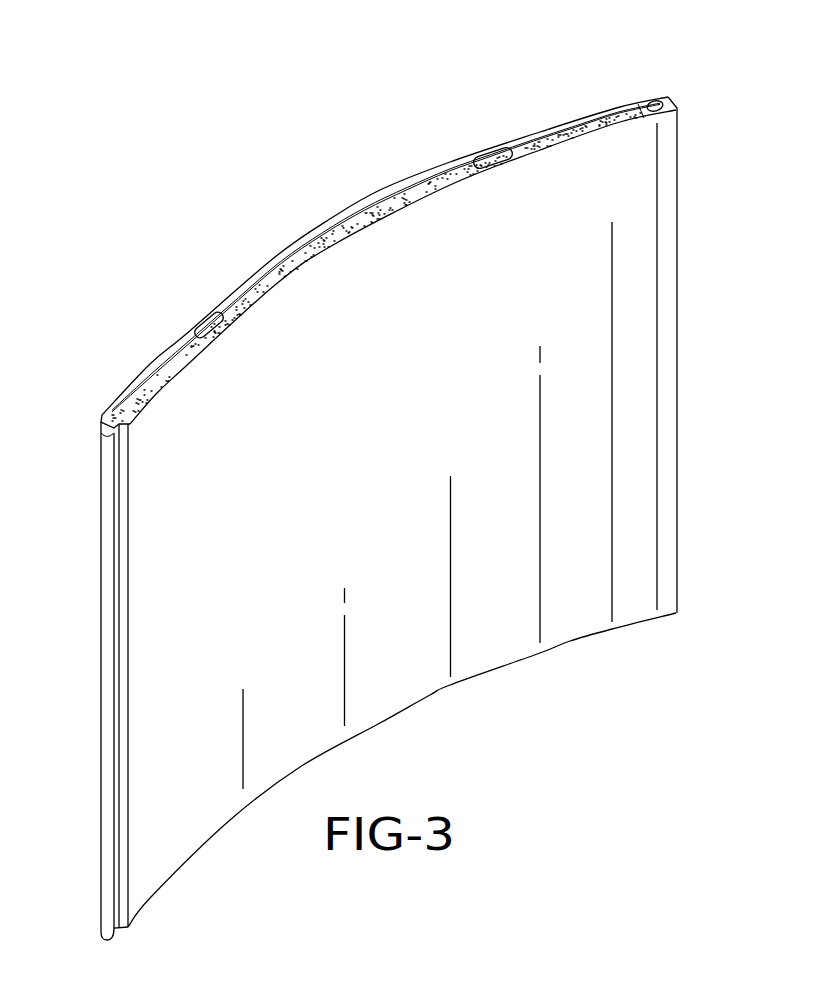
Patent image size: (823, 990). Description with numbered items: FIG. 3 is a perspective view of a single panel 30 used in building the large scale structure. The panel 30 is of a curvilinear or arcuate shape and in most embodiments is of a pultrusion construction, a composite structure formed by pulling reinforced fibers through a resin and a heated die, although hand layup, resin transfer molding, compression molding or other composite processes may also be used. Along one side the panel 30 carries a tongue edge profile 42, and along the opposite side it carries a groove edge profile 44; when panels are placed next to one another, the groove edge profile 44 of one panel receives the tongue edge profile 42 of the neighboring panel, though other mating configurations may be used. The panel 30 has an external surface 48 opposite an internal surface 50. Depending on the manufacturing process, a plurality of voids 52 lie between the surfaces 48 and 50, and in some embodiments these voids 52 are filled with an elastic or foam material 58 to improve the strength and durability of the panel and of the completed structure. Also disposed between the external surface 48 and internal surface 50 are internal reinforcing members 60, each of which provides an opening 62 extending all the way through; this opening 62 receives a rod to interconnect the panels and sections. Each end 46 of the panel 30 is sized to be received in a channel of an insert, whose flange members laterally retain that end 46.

The panel 30 is at (548, 105).
The tongue edge profile 42 is at (107, 652).
The groove edge profile 44 is at (668, 107).
The end 46 is at (330, 222).
The external surface 48 is at (362, 205).
The internal surface 50 is at (511, 400).
The voids 52 is at (148, 357).
The elastic or foam material 58 is at (138, 392).
The internal reinforcing members 60 is at (217, 313).
The opening 62 is at (505, 150).